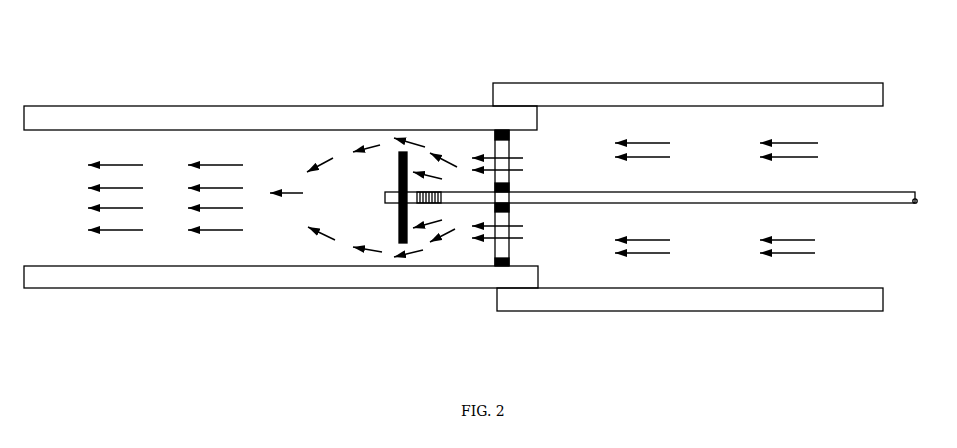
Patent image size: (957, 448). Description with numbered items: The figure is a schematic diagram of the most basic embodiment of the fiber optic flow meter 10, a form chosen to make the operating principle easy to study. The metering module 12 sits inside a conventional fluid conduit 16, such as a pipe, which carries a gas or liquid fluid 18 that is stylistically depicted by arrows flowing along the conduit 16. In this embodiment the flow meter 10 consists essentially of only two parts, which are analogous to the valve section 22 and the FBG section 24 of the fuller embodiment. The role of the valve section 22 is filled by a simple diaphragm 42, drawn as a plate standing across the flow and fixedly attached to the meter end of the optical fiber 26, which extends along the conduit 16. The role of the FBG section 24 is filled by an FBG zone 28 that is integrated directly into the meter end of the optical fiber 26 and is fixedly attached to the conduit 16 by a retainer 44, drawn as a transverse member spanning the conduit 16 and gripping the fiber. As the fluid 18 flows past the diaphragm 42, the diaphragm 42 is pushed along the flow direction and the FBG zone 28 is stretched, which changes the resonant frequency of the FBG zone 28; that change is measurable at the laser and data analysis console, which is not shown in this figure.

The fiber optic flow meter 10 is at (325, 362).
The metering module 12 is at (325, 311).
The fluid conduit 16 is at (283, 106).
The fluid 18 is at (88, 243).
The valve section 22 is at (356, 197).
The FBG section 24 is at (455, 98).
The optical fiber 26 is at (715, 192).
The FBG zone 28 is at (430, 204).
The diaphragm 42 is at (399, 217).
The retainer 44 is at (502, 130).